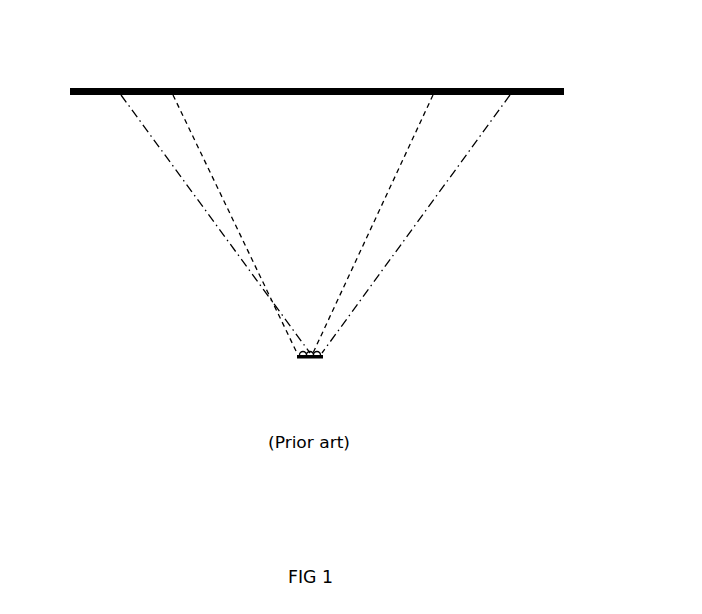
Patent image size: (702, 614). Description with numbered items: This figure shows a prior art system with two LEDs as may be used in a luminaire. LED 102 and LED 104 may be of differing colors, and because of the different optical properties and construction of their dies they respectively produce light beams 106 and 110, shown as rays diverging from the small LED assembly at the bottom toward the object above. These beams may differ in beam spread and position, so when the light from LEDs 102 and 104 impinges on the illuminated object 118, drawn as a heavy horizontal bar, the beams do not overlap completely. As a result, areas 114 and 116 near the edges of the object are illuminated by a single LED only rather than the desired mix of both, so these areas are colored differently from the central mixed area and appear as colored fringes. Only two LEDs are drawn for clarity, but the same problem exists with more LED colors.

The LED 102 is at (298, 358).
The LED 104 is at (320, 358).
The light beam 106 is at (220, 192).
The light beam 110 is at (162, 152).
The area 114 is at (140, 88).
The area 116 is at (474, 88).
The illuminated object 118 is at (296, 88).